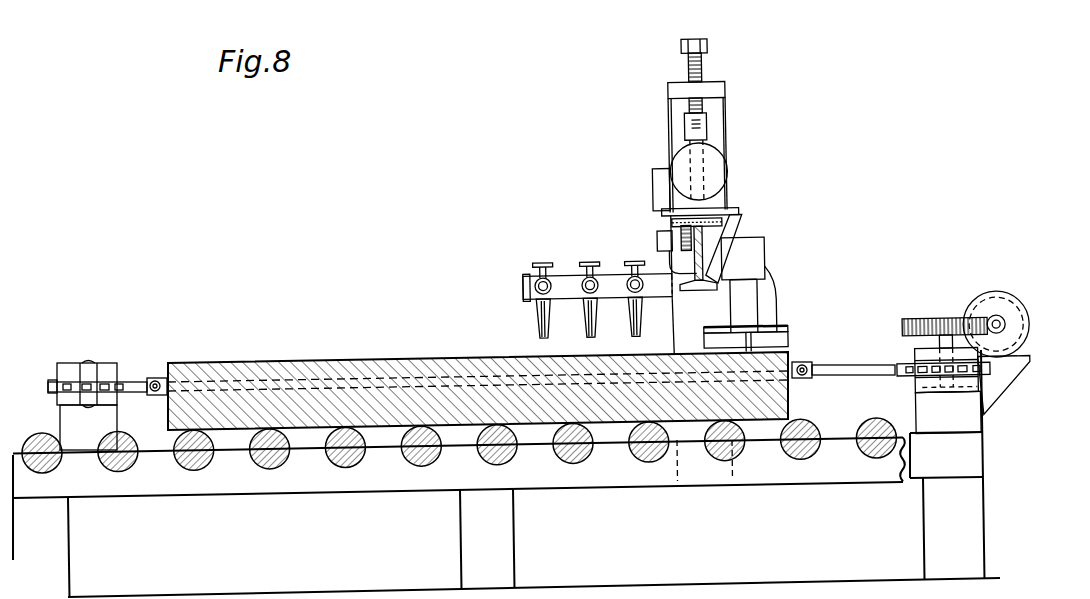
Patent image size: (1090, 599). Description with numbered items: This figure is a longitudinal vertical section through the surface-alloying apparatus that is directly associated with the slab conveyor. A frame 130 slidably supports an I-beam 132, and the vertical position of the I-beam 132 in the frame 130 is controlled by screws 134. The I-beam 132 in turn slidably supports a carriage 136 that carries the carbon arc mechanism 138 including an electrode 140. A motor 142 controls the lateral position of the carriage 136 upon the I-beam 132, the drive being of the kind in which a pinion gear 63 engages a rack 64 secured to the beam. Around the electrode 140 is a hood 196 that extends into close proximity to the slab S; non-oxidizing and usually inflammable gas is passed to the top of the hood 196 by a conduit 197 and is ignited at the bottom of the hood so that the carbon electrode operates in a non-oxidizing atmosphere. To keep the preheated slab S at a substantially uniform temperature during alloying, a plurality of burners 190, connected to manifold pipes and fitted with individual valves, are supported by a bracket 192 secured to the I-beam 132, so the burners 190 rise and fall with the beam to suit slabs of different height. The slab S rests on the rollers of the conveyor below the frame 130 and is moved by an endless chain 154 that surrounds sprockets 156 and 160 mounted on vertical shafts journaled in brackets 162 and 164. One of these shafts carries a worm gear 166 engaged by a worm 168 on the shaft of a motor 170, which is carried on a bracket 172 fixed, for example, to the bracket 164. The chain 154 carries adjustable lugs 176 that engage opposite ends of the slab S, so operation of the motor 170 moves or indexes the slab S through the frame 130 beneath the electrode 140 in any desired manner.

The screws 134 is at (707, 47).
The motor 142 is at (713, 162).
The carriage 136 is at (738, 210).
The I-beam 132 is at (701, 243).
The carbon arc mechanism 138 is at (753, 252).
The conduit 197 is at (774, 291).
The hood 196 is at (787, 326).
The electrode 140 is at (787, 338).
The rack 64 is at (682, 228).
The pinion gear 63 is at (658, 242).
The frame 130 is at (672, 341).
The bracket 192 is at (523, 285).
The burners 190 is at (630, 322).
The sprocket 156 is at (48, 386).
The bracket 162 is at (103, 362).
The endless chain 154 is at (137, 380).
The adjustable lugs 176 is at (158, 396).
The motor 170 is at (997, 292).
The worm gear 166 is at (935, 305).
The worm 168 is at (1006, 321).
The bracket 172 is at (1027, 366).
The sprocket 160 is at (993, 367).
The bracket 164 is at (977, 384).
The slab S is at (430, 358).